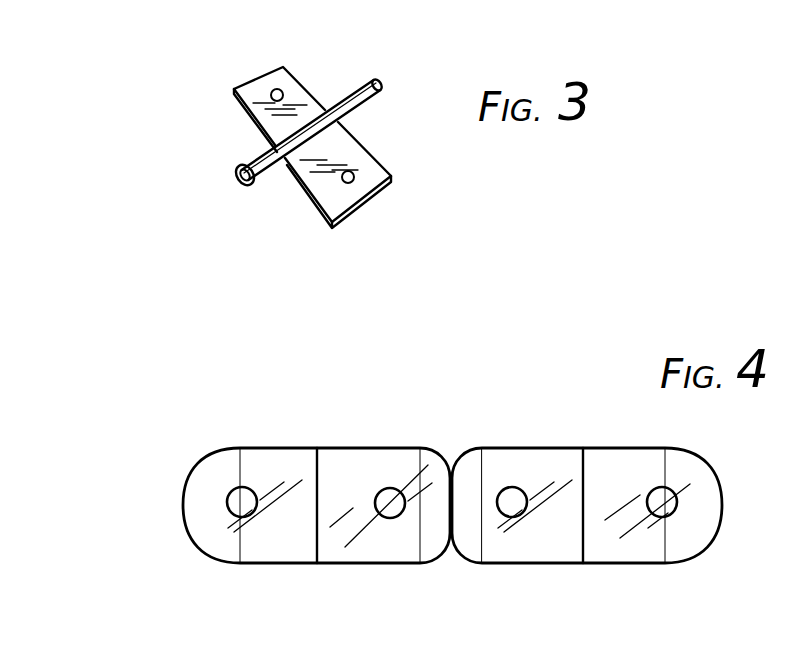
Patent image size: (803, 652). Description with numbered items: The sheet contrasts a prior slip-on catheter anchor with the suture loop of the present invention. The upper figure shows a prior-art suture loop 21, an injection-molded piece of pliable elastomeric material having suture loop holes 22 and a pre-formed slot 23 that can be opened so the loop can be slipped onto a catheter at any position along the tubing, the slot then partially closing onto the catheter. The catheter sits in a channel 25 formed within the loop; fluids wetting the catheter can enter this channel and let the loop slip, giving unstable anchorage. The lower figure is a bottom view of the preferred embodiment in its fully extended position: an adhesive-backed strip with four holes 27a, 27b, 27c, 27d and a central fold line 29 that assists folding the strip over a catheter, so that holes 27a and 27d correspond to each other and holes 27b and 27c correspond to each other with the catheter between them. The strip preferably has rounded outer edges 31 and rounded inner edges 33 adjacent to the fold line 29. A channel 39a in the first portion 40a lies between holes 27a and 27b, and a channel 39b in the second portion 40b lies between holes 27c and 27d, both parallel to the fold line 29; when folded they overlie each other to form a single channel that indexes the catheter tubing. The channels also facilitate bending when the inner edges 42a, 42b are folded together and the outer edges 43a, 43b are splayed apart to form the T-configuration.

In FIG. 3, the suture loop 21 is at (338, 83).
In FIG. 3, the suture loop holes 22 is at (280, 90).
In FIG. 3, the pre-formed slot 23 is at (380, 92).
In FIG. 3, the channel 25 is at (243, 180).
In FIG. 4, the hole 27a is at (245, 496).
In FIG. 4, the hole 27b is at (393, 495).
In FIG. 4, the hole 27c is at (522, 515).
In FIG. 4, the hole 27d is at (664, 495).
In FIG. 4, the fold line 29 is at (443, 462).
In FIG. 4, the rounded outer edges 31 is at (205, 462).
In FIG. 4, the rounded inner edges 33 is at (468, 450).
In FIG. 4, the channel 39a is at (313, 527).
In FIG. 4, the channel 39b is at (584, 518).
In FIG. 4, the first portion 40a is at (296, 430).
In FIG. 4, the second portion 40b is at (590, 385).
In FIG. 4, the inner edge 42a is at (367, 545).
In FIG. 4, the inner edge 42b is at (520, 540).
In FIG. 4, the outer edge 43a is at (228, 533).
In FIG. 4, the outer edge 43b is at (663, 540).